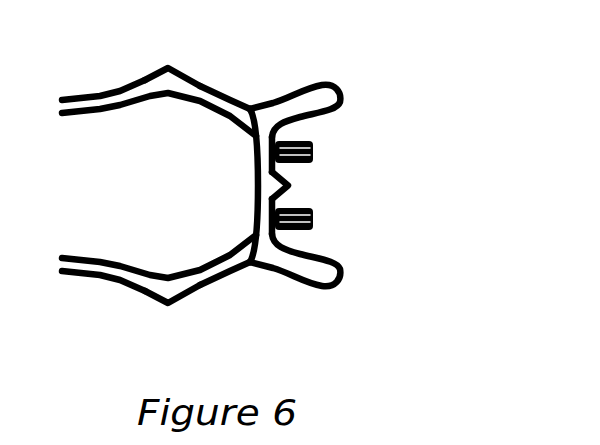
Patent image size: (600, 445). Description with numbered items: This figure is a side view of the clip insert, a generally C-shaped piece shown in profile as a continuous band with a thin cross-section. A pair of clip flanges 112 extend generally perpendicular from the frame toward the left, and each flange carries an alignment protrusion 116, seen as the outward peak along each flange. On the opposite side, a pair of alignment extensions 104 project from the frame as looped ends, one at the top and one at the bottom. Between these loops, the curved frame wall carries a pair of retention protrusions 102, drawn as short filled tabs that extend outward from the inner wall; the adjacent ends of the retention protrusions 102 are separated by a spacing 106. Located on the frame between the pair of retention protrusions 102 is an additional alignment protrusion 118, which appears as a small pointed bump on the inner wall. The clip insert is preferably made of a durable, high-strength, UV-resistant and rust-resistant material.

The retention protrusions 102 is at (315, 149).
The alignment extensions 104 is at (333, 93).
The spacing 106 is at (307, 190).
The clip flanges 112 is at (132, 85).
The alignment protrusions 116 is at (172, 63).
The alignment protrusion 118 is at (290, 182).